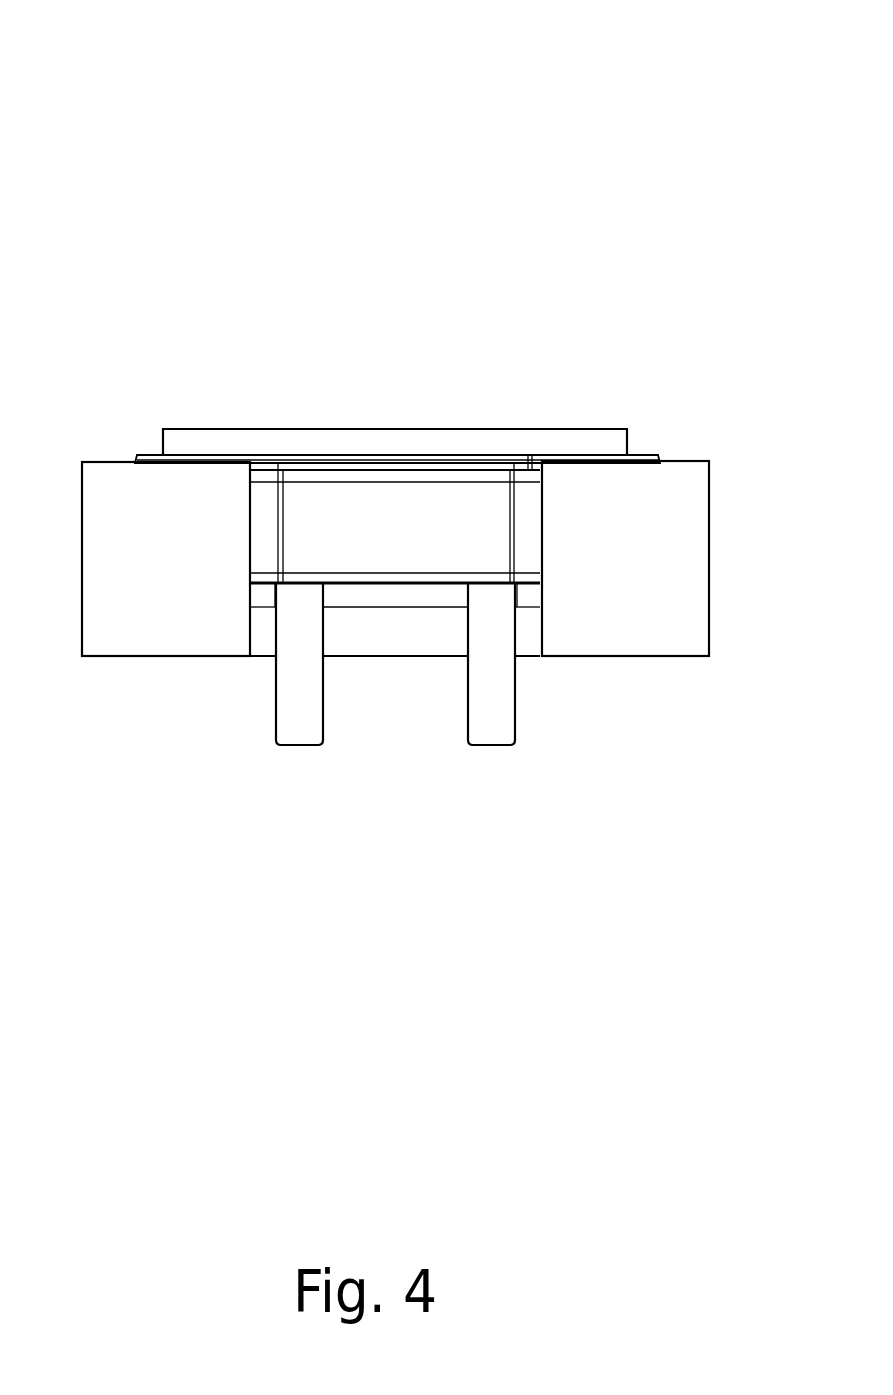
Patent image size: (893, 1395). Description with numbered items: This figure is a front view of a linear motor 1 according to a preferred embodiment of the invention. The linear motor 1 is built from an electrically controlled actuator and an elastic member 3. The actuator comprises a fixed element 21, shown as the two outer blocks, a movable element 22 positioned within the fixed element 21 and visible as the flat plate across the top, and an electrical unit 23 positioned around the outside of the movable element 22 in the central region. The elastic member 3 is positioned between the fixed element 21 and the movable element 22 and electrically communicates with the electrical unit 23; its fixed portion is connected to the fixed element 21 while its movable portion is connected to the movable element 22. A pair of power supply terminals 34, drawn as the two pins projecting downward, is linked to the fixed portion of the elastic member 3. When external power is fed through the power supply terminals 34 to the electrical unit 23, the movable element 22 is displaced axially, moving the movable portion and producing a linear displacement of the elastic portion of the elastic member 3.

The linear motor 1 is at (737, 42).
The fixed element 21 is at (138, 642).
The movable element 22 is at (333, 438).
The electrical unit 23 is at (438, 493).
The elastic member 3 is at (390, 593).
The power supply terminals 34 is at (303, 730).